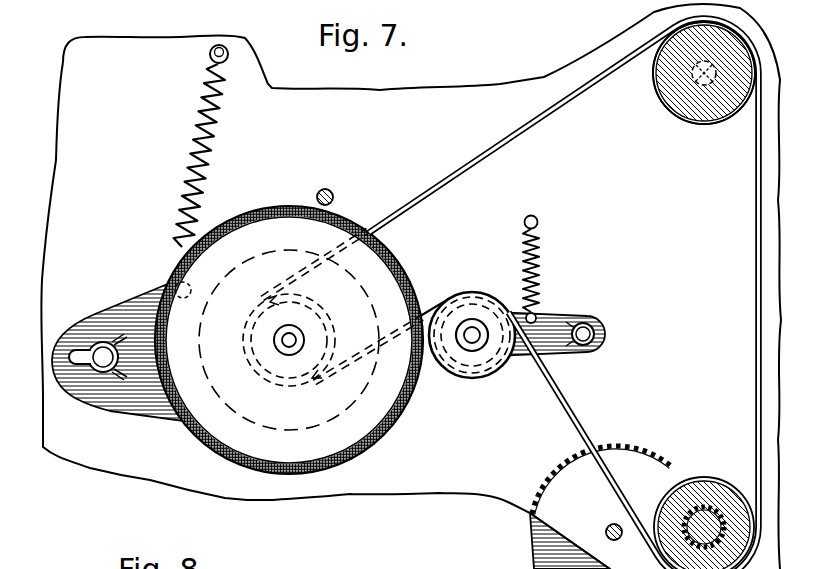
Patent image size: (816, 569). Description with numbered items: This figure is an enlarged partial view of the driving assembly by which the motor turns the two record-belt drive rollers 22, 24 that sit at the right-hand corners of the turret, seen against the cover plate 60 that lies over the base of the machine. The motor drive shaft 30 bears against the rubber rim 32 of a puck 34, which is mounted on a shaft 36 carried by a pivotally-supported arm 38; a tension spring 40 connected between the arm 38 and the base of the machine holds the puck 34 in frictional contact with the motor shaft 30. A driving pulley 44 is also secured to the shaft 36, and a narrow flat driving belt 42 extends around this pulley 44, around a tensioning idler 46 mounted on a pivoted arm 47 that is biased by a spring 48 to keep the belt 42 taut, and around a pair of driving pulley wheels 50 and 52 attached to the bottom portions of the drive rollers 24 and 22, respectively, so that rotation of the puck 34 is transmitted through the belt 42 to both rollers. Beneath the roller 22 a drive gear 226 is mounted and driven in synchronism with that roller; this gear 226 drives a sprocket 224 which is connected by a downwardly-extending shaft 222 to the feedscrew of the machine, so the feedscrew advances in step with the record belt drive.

The roller 22 is at (737, 480).
The roller 24 is at (682, 98).
The motor drive shaft 30 is at (323, 190).
The rubber rim 32 is at (360, 210).
The puck 34 is at (238, 233).
The shaft 36 is at (285, 340).
The pivotally-supported arm 38 is at (115, 314).
The tension spring 40 is at (197, 148).
The driving belt 42 is at (535, 123).
The driving pulley 44 is at (326, 307).
The tensioning idler 46 is at (475, 378).
The pivoted arm 47 is at (550, 326).
The spring 48 is at (540, 255).
The driving pulley wheel 50 is at (703, 128).
The driving pulley wheel 52 is at (691, 478).
The cover plate 60 is at (80, 70).
The downwardly-extending shaft 222 is at (612, 522).
The sprocket 224 is at (536, 543).
The drive gear 226 is at (715, 478).